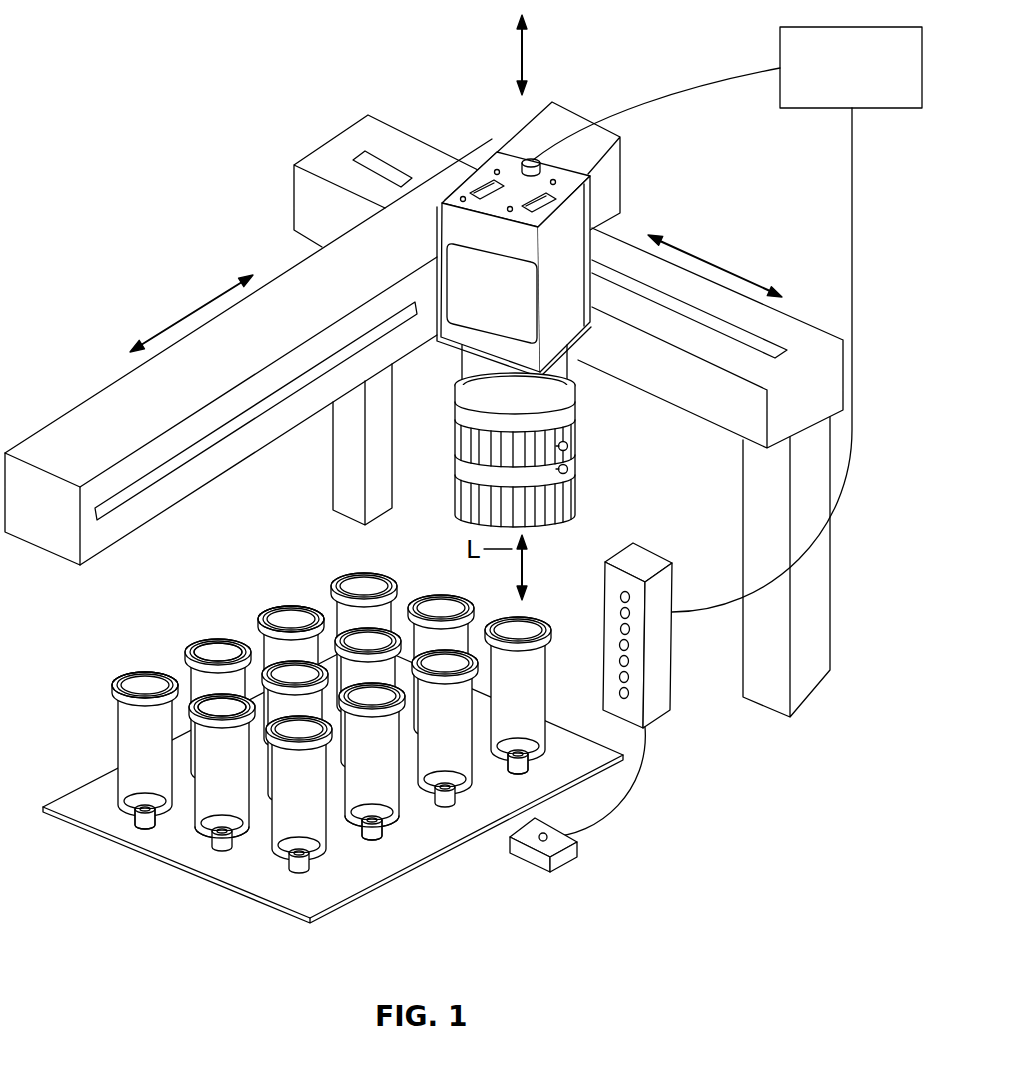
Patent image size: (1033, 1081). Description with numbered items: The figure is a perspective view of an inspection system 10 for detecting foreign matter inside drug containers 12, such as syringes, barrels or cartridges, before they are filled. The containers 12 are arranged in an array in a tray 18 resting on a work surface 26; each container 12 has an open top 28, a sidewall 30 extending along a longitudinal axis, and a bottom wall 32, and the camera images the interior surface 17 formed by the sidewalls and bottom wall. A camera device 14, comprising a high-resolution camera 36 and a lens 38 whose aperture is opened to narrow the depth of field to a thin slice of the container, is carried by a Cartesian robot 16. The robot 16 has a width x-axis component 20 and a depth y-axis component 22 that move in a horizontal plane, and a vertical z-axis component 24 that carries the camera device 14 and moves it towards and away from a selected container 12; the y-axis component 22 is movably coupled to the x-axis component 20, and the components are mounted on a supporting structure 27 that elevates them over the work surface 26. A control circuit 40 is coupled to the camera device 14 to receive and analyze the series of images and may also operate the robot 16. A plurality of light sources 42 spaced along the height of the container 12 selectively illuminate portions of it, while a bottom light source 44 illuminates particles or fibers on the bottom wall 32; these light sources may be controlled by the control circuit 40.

The inspection system 10 is at (172, 52).
The drug container 12 is at (112, 810).
The camera device 14 is at (454, 127).
The robot 16 is at (652, 192).
The interior surface 17 is at (146, 684).
The tray 18 is at (187, 869).
The horizontal x-axis component 20 is at (803, 336).
The horizontal y-axis component 22 is at (86, 417).
The vertical z-axis component 24 is at (432, 237).
The work surface 26 is at (600, 807).
The supporting structure 27 is at (832, 563).
The open top 28 is at (222, 705).
The sidewall 30 is at (262, 830).
The bottom wall 32 is at (134, 822).
The camera 36 is at (592, 214).
The lens 38 is at (572, 458).
The control circuit 40 is at (836, 26).
The light source 42 is at (618, 611).
The bottom light source 44 is at (556, 847).